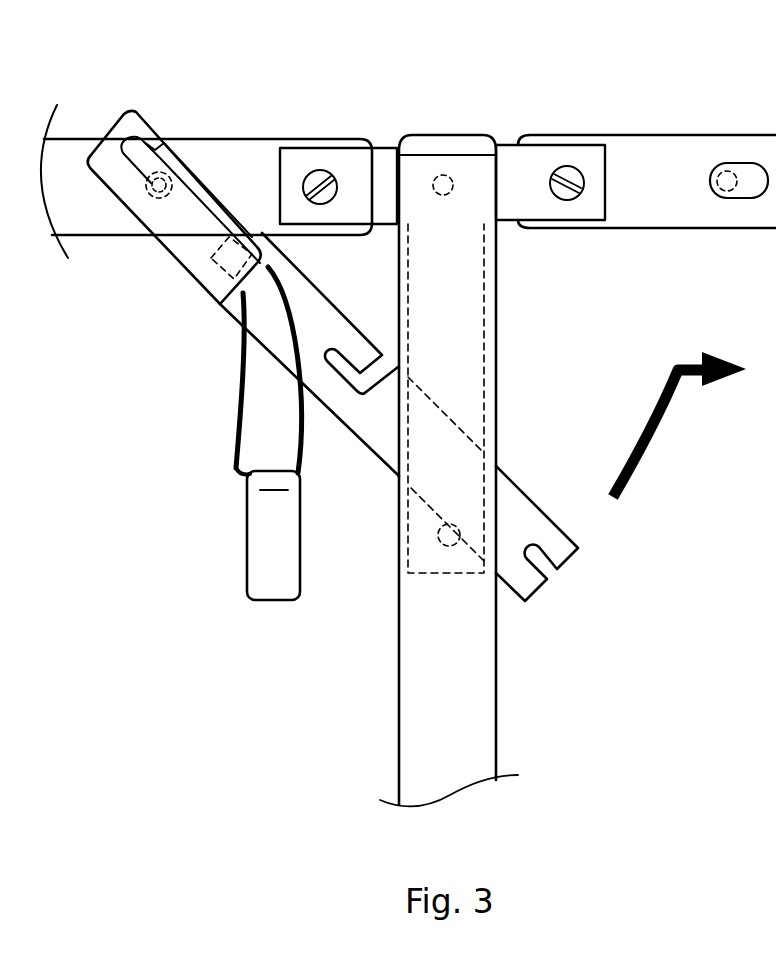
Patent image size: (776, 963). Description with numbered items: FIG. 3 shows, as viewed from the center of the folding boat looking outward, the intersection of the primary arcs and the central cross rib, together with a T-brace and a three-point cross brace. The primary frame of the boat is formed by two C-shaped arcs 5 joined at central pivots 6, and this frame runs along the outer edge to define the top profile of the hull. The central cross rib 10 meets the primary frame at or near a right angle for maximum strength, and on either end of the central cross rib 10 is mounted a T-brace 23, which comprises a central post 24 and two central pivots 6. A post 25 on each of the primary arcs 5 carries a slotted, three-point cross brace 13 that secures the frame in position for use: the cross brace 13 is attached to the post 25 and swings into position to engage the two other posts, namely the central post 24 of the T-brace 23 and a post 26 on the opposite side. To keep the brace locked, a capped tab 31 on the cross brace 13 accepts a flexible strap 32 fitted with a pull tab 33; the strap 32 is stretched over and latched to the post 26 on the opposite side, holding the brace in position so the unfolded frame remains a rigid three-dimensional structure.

The C-shaped arc 5 is at (238, 173).
The central pivot 6 is at (577, 170).
The central cross rib 10 is at (498, 745).
The three-point cross brace 13 is at (176, 252).
The T-brace 23 is at (367, 173).
The central post 24 is at (448, 178).
The post 25 is at (187, 190).
The post 26 is at (740, 203).
The capped tab 31 is at (230, 285).
The flexible strap 32 is at (243, 368).
The pull tab 33 is at (248, 568).